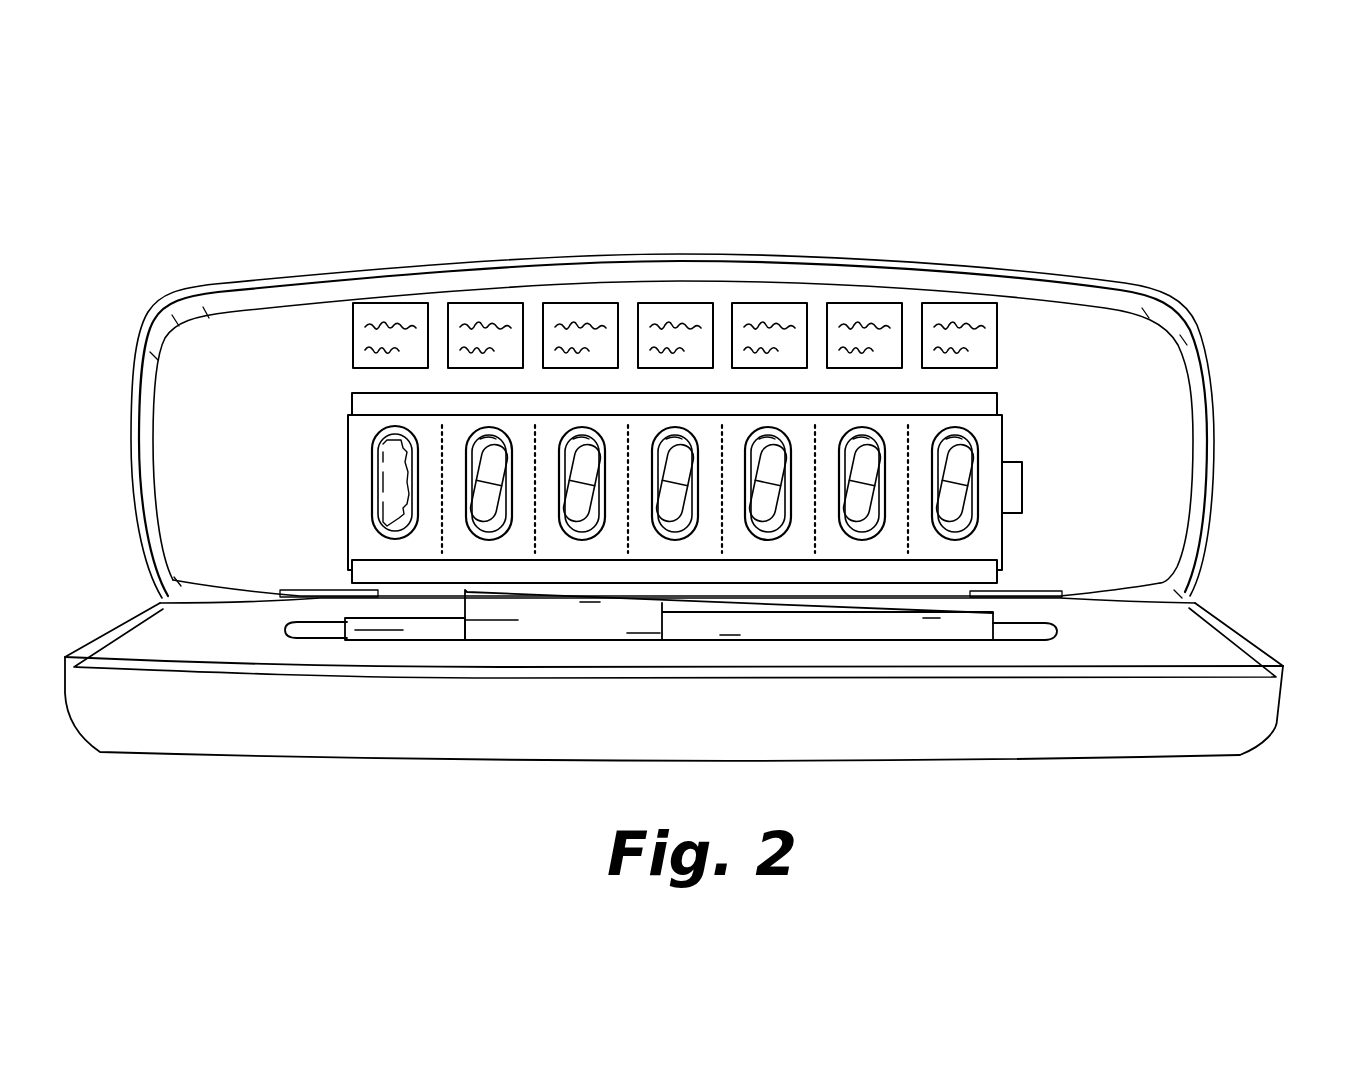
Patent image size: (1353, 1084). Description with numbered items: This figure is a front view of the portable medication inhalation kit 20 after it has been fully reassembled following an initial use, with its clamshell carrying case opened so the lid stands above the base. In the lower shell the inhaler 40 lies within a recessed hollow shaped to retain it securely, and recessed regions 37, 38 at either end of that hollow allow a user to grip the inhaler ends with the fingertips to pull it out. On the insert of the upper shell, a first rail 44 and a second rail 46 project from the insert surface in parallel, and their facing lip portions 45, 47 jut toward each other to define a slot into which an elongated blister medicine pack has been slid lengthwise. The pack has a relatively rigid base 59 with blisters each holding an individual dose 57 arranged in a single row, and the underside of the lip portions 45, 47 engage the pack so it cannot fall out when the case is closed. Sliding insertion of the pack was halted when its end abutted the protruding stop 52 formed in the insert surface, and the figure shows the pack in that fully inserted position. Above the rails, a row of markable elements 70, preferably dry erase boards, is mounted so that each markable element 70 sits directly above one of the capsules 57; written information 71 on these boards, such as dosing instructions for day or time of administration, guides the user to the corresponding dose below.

The portable medication inhalation kit 20 is at (1255, 283).
The recessed region 37 is at (317, 630).
The recessed region 38 is at (1032, 628).
The inhaler 40 is at (491, 638).
The first rail 44 is at (757, 393).
The lip portion 45 is at (815, 415).
The second rail 46 is at (873, 582).
The lip portion 47 is at (590, 558).
The protruding stop 52 is at (1022, 483).
The individual dose 57 is at (480, 455).
The base 59 is at (995, 432).
The markable element 70 is at (666, 303).
The written information 71 is at (597, 327).